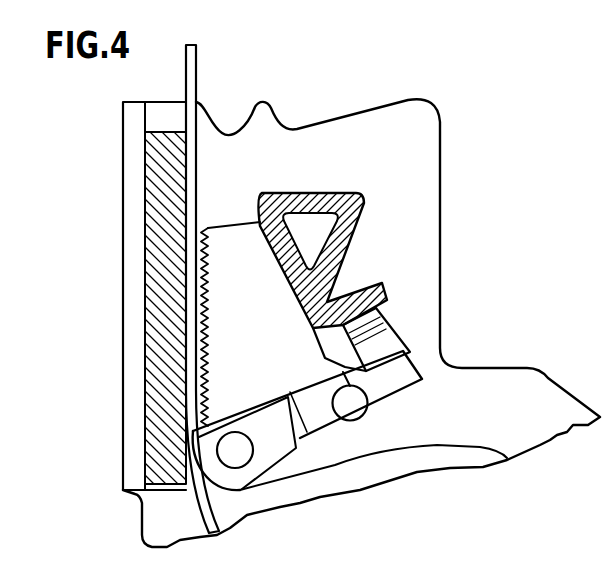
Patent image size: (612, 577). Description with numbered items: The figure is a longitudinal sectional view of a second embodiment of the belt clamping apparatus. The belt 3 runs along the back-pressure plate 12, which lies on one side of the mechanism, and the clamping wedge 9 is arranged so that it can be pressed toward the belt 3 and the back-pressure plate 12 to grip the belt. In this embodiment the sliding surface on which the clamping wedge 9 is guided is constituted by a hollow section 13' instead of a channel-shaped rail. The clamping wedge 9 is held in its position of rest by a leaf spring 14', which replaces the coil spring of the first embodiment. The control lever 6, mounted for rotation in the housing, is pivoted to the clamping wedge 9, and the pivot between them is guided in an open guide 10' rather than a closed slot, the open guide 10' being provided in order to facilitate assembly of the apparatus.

The belt 3 is at (196, 50).
The back-pressure plate 12 is at (170, 169).
The hollow section 13' is at (369, 263).
The leaf spring 14' is at (411, 327).
The clamping wedge 9 is at (218, 328).
The open guide 10' is at (307, 449).
The control lever 6 is at (372, 427).